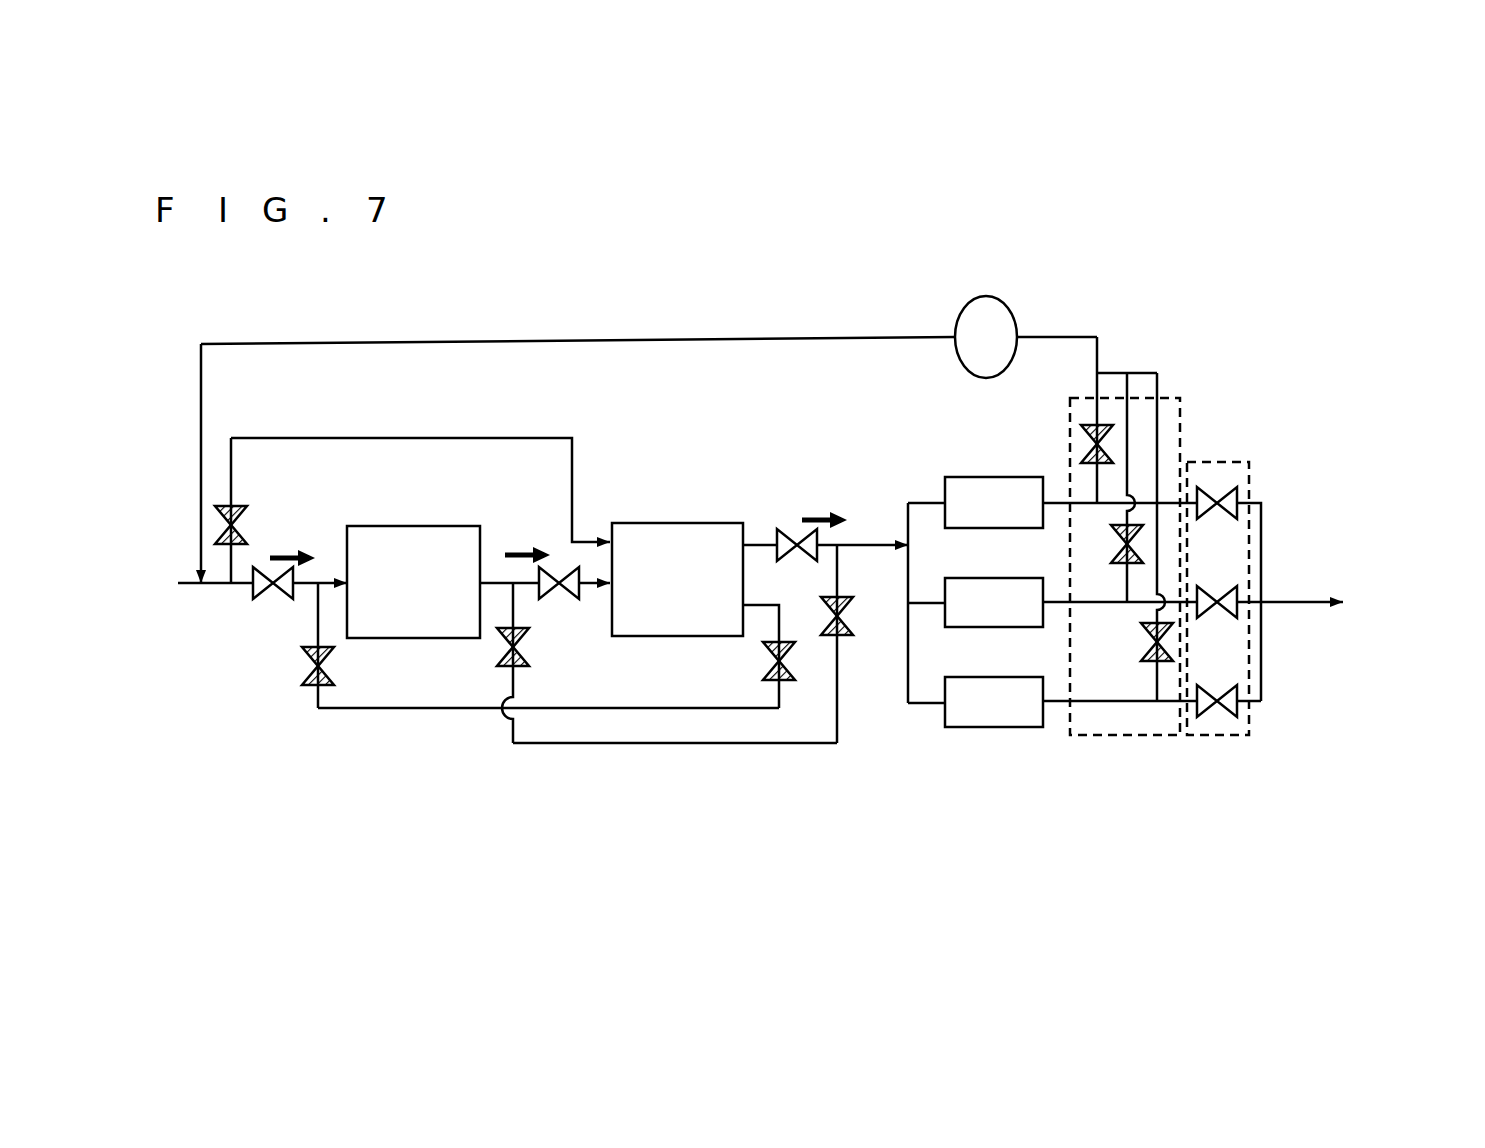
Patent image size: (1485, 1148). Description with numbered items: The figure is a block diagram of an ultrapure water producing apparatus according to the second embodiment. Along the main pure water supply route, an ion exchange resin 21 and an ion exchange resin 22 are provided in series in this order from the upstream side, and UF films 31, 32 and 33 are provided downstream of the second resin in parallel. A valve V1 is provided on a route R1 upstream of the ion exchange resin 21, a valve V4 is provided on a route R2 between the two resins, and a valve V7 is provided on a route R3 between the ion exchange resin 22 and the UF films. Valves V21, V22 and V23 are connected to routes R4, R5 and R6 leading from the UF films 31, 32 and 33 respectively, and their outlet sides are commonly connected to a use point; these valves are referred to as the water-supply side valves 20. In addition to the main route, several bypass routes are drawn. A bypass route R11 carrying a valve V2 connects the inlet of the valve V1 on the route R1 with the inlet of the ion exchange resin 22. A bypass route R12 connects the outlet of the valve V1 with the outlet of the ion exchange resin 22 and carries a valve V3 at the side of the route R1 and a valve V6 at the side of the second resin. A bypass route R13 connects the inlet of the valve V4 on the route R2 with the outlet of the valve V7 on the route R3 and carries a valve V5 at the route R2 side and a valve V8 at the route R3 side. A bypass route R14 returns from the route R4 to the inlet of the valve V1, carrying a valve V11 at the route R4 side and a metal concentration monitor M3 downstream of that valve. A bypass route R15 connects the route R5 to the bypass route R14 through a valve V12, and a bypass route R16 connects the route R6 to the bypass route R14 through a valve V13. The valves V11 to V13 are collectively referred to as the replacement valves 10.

The route R1 is at (217, 587).
The valve V1 is at (267, 597).
The valve V2 is at (247, 516).
The valve V3 is at (335, 672).
The valve V4 is at (560, 567).
The valve V5 is at (531, 655).
The valve V6 is at (763, 665).
The valve V7 is at (792, 537).
The valve V8 is at (851, 622).
The valve V11 is at (1081, 437).
The valve V12 is at (1112, 550).
The valve V13 is at (1143, 645).
The valve V21 is at (1237, 490).
The valve V22 is at (1237, 590).
The valve V23 is at (1237, 708).
The route R2 is at (495, 578).
The route R3 is at (757, 541).
The route R4 is at (1056, 501).
The route R5 is at (1052, 605).
The route R6 is at (1053, 704).
The bypass route R11 is at (388, 438).
The bypass route R12 is at (432, 710).
The bypass route R13 is at (718, 745).
The bypass route R14 is at (1094, 389).
The bypass route R15 is at (1131, 388).
The bypass route R16 is at (1161, 420).
The metal concentration monitor M3 is at (1026, 337).
The ion exchange resin 21 is at (412, 526).
The ion exchange resin 22 is at (659, 523).
The UF film 31 is at (978, 477).
The UF film 32 is at (971, 578).
The UF film 33 is at (996, 677).
The replacement valves 10 is at (1128, 740).
The water-supply side valves 20 is at (1215, 740).